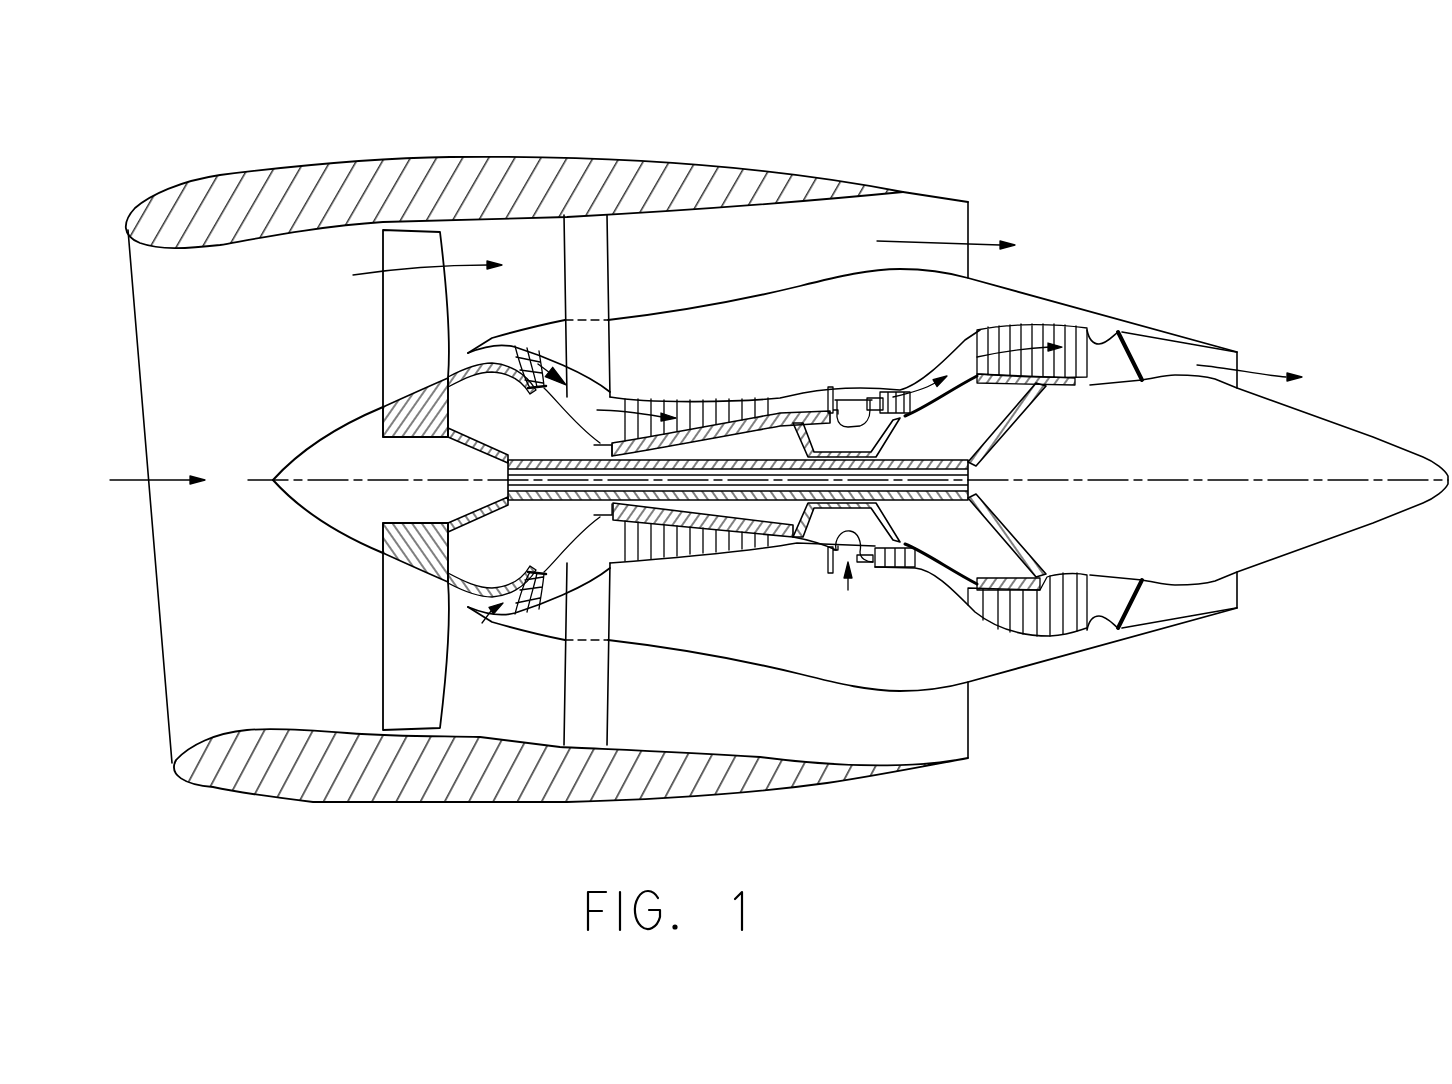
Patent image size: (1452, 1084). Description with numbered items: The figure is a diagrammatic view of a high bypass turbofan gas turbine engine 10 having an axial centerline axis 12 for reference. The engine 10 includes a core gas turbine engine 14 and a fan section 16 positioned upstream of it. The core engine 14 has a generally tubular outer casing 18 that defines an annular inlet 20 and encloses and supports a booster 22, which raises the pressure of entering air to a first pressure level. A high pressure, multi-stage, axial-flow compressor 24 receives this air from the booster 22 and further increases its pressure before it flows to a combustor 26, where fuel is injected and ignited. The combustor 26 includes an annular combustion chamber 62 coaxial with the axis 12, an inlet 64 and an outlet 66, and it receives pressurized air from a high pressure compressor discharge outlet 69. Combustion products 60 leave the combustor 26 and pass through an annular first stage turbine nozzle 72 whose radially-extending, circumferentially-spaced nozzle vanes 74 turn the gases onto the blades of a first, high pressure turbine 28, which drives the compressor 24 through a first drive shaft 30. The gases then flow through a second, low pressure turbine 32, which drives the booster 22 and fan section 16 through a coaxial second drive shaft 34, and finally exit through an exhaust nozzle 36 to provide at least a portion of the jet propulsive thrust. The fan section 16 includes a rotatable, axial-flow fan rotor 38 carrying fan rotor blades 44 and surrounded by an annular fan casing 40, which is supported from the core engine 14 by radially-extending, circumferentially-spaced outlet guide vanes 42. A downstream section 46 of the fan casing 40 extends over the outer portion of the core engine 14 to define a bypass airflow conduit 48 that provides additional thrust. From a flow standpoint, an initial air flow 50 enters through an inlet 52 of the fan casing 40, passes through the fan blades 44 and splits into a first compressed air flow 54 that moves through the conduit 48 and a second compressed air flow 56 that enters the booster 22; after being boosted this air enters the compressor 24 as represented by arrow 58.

The gas turbine engine 10 is at (1150, 178).
The axial centerline axis 12 is at (1172, 480).
The core gas turbine engine 14 is at (816, 325).
The fan section 16 is at (435, 130).
The outer casing 18 is at (800, 676).
The annular inlet 20 is at (490, 622).
The booster 22 is at (560, 558).
The high pressure compressor 24 is at (647, 548).
The combustor 26 is at (847, 582).
The first turbine 28 is at (913, 557).
The first drive shaft 30 is at (860, 437).
The second turbine 32 is at (1070, 630).
The second drive shaft 34 is at (570, 458).
The exhaust nozzle 36 is at (1240, 360).
The fan rotor 38 is at (446, 440).
The fan casing 40 is at (418, 800).
The outlet guide vanes 42 is at (607, 262).
The fan rotor blades 44 is at (383, 661).
The downstream section 46 is at (858, 182).
The bypass airflow conduit 48 is at (770, 258).
The initial air flow 50 is at (160, 480).
The inlet 52 is at (168, 745).
The first compressed air flow 54 is at (405, 268).
The second compressed air flow 56 is at (470, 351).
The booster discharge air flow 58 is at (633, 400).
The combustion products 60 is at (900, 375).
The annular combustion chamber 62 is at (852, 572).
The combustor inlet 64 is at (827, 407).
The combustor outlet 66 is at (877, 397).
The high pressure compressor discharge outlet 69 is at (827, 553).
The first stage turbine nozzle 72 is at (870, 562).
The nozzle vanes 74 is at (875, 522).